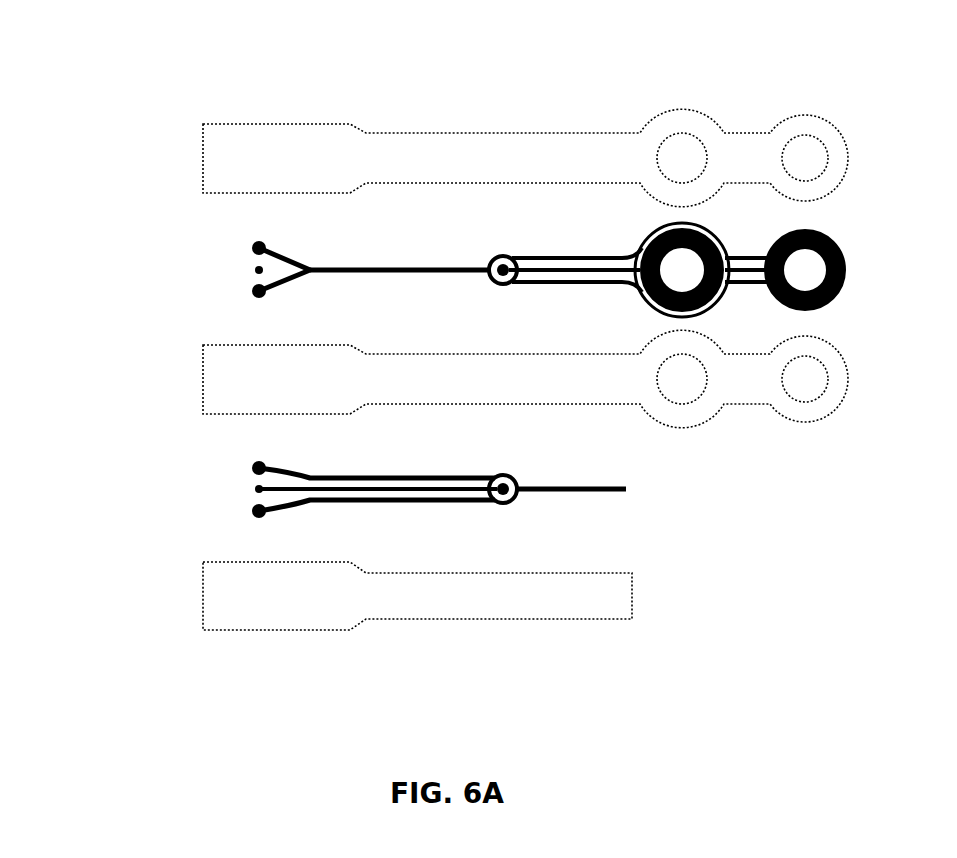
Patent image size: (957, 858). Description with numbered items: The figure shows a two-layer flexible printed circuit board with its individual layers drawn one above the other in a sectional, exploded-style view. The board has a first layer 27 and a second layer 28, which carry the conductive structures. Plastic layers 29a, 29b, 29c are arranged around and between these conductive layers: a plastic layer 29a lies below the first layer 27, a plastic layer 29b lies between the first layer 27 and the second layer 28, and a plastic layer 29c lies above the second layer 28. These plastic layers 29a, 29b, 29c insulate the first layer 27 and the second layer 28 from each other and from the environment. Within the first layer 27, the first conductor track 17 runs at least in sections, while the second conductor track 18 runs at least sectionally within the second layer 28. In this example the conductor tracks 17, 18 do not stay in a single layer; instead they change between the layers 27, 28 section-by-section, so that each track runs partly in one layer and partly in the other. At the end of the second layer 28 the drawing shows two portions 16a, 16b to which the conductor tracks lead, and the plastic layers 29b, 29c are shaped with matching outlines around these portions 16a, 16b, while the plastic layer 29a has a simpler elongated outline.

The plastic layer 29c is at (198, 164).
The second layer 28 is at (189, 264).
The second conductor track 18 is at (552, 254).
The first conductor track 17 is at (577, 273).
The electrode ring 16a is at (652, 216).
The electrode ring 16b is at (805, 216).
The plastic layer 29b is at (199, 384).
The first layer 27 is at (202, 495).
The plastic layer 29a is at (189, 603).